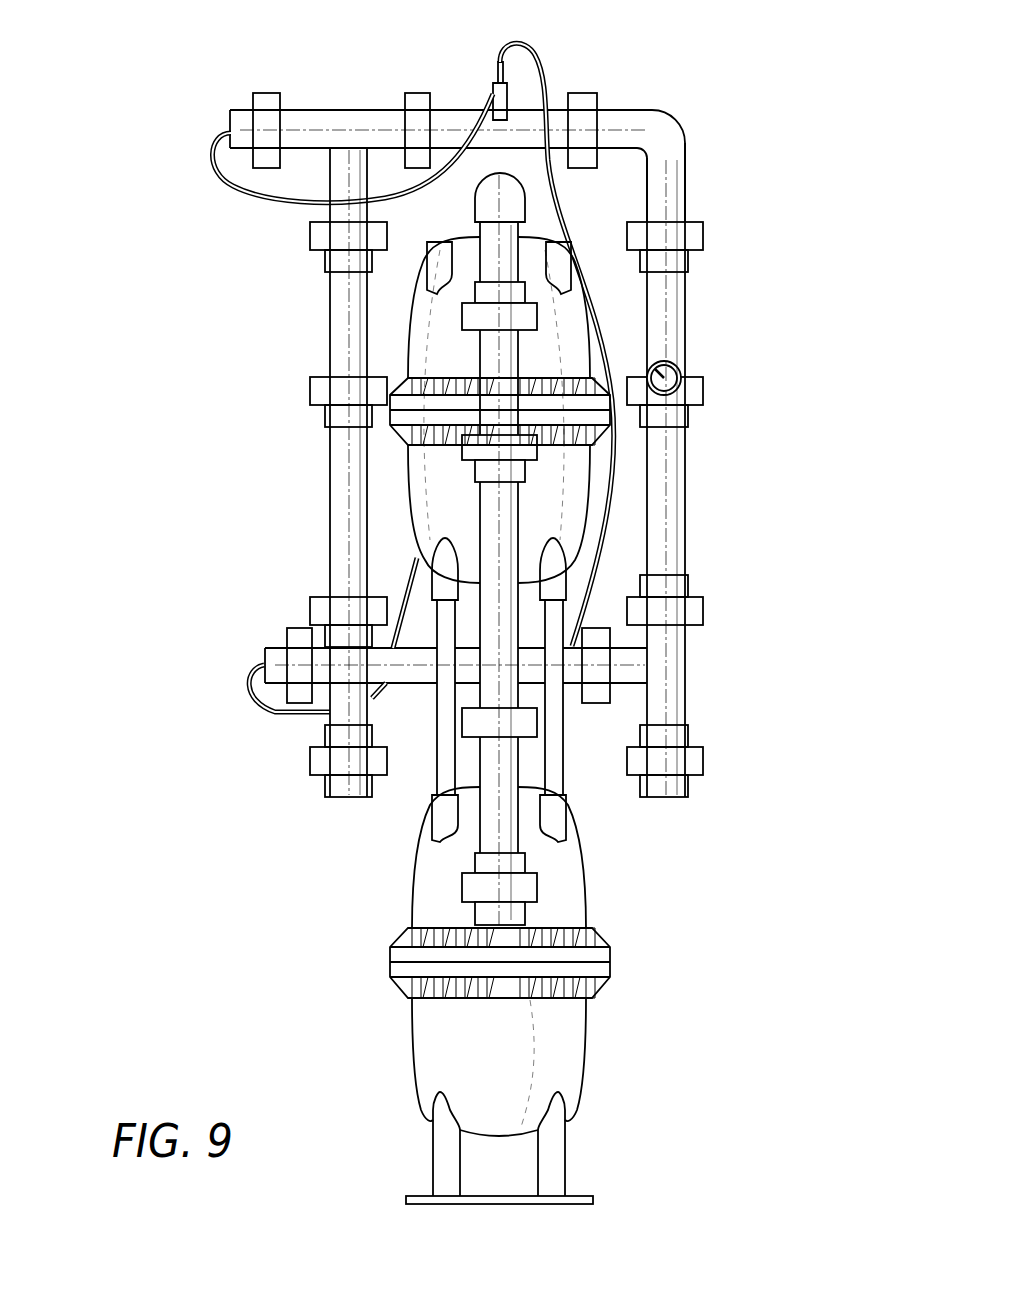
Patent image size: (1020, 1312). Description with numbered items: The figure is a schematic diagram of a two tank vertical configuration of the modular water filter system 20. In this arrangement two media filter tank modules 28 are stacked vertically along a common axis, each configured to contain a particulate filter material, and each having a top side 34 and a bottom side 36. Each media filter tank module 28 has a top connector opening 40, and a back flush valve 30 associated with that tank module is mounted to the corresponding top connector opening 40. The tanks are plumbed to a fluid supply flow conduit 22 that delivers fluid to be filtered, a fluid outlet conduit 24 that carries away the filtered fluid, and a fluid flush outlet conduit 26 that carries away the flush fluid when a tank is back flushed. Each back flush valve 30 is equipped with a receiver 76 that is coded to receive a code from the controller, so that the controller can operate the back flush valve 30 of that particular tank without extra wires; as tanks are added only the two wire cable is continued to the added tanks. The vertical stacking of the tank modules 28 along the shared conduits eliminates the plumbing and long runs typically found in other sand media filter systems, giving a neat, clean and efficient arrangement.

The modular water filter system 20 is at (690, 90).
The fluid supply flow conduit 22 is at (686, 490).
The fluid outlet conduit 24 is at (518, 768).
The fluid flush outlet conduit 26 is at (332, 493).
The media filter tank module 28 is at (425, 322).
The back flush valve 30 is at (188, 102).
The top side 34 is at (393, 876).
The bottom side 36 is at (388, 1059).
The top connector opening 40 is at (462, 237).
The receiver 76 is at (208, 147).